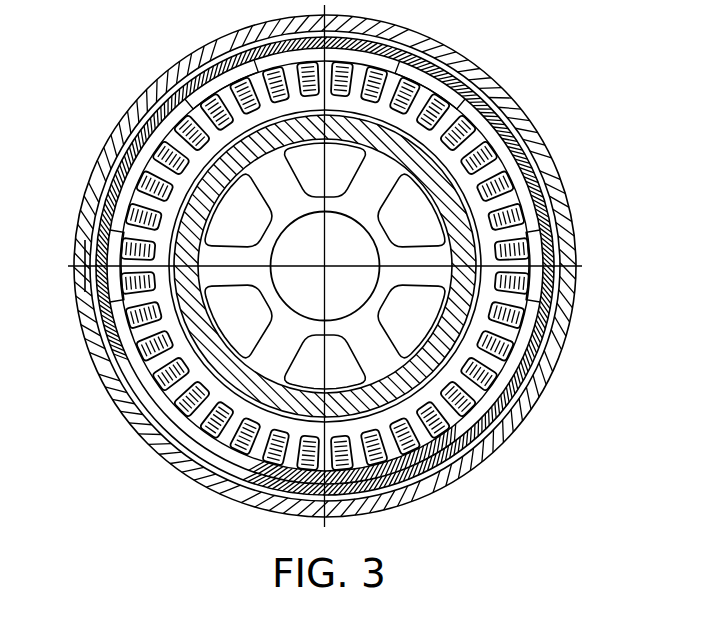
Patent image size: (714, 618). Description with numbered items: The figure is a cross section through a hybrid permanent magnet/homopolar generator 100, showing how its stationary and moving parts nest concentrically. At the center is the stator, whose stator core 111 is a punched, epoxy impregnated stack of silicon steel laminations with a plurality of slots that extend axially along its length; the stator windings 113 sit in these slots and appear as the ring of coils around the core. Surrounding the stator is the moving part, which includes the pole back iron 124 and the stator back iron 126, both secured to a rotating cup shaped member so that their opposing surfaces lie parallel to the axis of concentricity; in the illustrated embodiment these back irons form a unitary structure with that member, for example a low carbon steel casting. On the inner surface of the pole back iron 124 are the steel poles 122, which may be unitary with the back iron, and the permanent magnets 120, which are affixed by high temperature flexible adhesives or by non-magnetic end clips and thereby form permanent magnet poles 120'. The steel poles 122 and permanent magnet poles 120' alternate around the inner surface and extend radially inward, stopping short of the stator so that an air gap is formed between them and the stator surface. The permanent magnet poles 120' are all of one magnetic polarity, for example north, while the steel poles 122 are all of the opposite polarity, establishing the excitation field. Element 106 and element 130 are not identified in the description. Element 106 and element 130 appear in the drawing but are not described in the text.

The hybrid permanent magnet/homopolar generator 100 is at (606, 34).
The housing 106 is at (578, 238).
The stator core 111 is at (490, 296).
The stator windings 113 is at (520, 398).
The permanent magnets 120 is at (395, 239).
The permanent magnet poles 120' is at (272, 266).
The steel poles 122 is at (120, 185).
The pole back iron 124 is at (100, 270).
The stator back iron 126 is at (185, 415).
The housing outer surface 130 is at (505, 92).